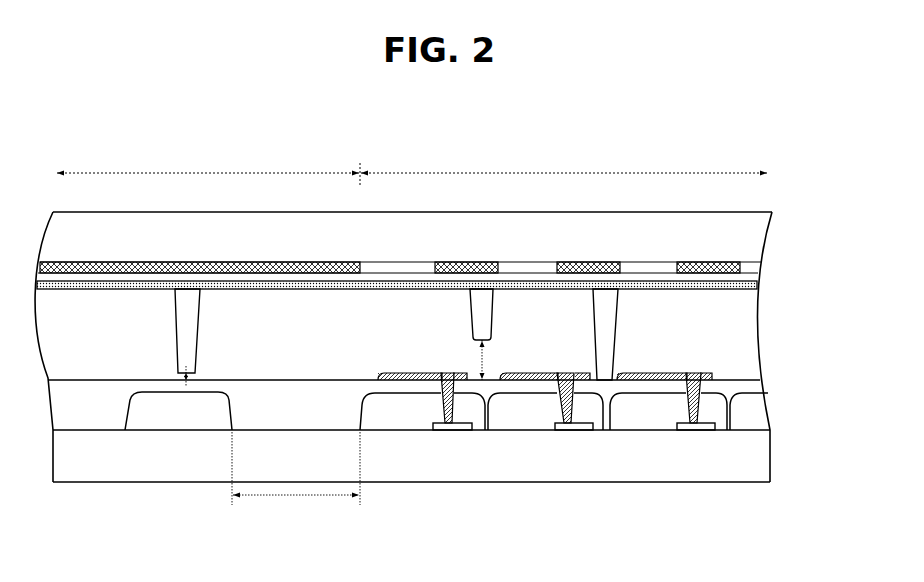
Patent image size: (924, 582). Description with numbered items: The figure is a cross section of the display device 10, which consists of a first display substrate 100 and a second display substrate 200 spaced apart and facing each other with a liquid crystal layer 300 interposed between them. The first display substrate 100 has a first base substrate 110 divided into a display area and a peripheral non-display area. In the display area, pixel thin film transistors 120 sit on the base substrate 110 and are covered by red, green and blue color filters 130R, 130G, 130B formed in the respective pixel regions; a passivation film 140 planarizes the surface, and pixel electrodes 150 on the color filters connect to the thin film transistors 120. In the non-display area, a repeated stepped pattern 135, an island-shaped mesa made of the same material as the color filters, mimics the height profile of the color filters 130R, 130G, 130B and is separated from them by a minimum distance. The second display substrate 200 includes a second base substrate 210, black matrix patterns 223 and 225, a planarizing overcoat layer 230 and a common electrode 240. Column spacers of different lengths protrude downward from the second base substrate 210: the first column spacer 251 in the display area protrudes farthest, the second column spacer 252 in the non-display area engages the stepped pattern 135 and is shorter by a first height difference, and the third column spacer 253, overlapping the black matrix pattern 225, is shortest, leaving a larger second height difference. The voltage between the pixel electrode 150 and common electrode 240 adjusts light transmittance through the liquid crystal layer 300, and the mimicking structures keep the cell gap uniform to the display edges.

The display device 10 is at (748, 152).
The first display substrate 100 is at (784, 486).
The first base substrate 110 is at (758, 455).
The pixel thin film transistor 120 is at (449, 432).
The red color filter 130R is at (408, 415).
The green color filter 130G is at (517, 420).
The blue color filter 130B is at (644, 420).
The stepped pattern 135 is at (178, 422).
The passivation film 140 is at (750, 386).
The pixel electrode 150 is at (710, 370).
The second display substrate 200 is at (784, 223).
The second base substrate 210 is at (759, 241).
The black matrix pattern 223 is at (108, 262).
The black matrix pattern 225 is at (457, 262).
The planarizing overcoat layer 230 is at (756, 268).
The common electrode 240 is at (753, 283).
The first column spacer 251 is at (616, 305).
The second column spacer 252 is at (197, 305).
The third column spacer 253 is at (494, 305).
The liquid crystal layer 300 is at (753, 325).